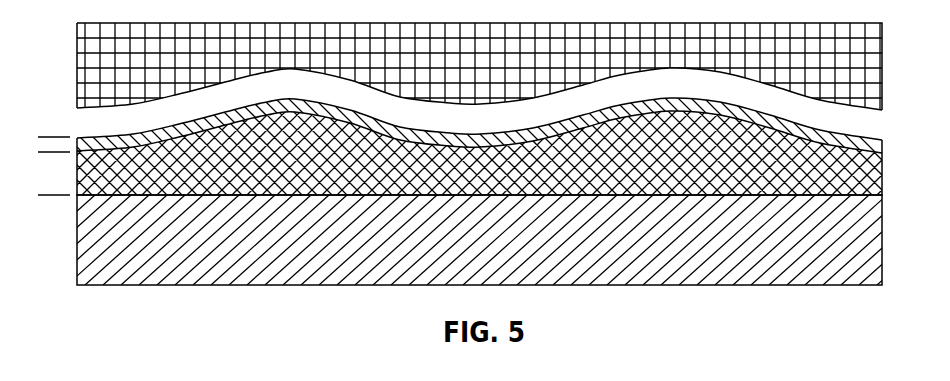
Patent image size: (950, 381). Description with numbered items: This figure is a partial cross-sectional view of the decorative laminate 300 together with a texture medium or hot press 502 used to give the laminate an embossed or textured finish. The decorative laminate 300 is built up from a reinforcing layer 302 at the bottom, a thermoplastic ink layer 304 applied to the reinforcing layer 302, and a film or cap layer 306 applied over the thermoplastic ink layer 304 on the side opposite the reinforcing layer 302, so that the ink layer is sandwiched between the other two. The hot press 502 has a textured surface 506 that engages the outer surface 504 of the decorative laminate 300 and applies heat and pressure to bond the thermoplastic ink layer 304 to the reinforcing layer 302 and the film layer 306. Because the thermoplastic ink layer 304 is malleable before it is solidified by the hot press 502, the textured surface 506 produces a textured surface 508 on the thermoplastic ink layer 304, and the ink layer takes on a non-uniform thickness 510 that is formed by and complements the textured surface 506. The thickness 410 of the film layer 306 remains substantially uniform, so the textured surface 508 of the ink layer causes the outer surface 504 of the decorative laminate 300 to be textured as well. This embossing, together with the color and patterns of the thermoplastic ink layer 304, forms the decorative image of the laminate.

The decorative laminate 300 is at (797, 333).
The reinforcing layer 302 is at (882, 268).
The thermoplastic ink layer 304 is at (879, 183).
The film layer 306 is at (879, 147).
The thickness of the film layer 410 is at (57, 137).
The hot press 502 is at (77, 53).
The outer surface of the decorative laminate 504 is at (338, 108).
The textured surface of the hot press 506 is at (400, 98).
The textured surface of the thermoplastic ink layer 508 is at (272, 110).
The non-uniform thickness of the thermoplastic ink layer 510 is at (57, 153).